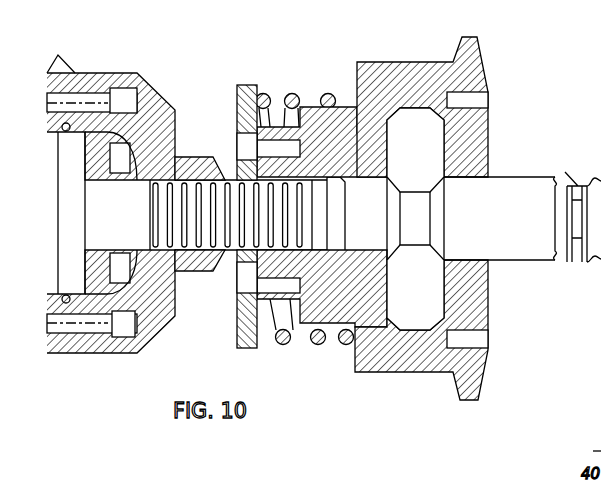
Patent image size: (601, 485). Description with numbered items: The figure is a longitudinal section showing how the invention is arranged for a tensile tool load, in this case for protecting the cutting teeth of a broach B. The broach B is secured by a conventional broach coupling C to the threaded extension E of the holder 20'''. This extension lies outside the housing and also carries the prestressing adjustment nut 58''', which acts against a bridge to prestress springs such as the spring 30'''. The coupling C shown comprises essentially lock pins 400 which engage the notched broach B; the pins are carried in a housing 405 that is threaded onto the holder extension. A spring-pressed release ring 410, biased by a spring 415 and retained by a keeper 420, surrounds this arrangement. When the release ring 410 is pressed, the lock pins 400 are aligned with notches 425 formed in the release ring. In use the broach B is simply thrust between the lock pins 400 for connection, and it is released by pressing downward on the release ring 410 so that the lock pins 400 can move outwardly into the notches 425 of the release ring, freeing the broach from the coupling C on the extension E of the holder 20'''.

The spring 30''' is at (119, 199).
The holder 20''' is at (221, 218).
The prestressing adjustment nut 58''' is at (200, 194).
The threaded extension E is at (229, 259).
The spring 415 is at (320, 348).
The keeper 420 is at (246, 348).
The broach coupling C is at (451, 215).
The housing 405 is at (487, 138).
The release ring 410 is at (422, 372).
The notches 425 is at (488, 103).
The lock pins 400 is at (428, 157).
The broach B is at (596, 166).